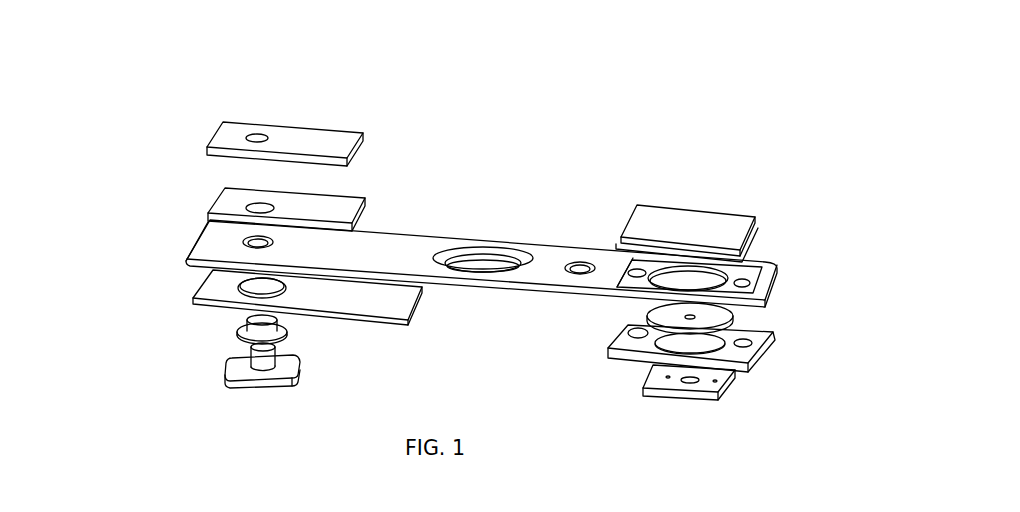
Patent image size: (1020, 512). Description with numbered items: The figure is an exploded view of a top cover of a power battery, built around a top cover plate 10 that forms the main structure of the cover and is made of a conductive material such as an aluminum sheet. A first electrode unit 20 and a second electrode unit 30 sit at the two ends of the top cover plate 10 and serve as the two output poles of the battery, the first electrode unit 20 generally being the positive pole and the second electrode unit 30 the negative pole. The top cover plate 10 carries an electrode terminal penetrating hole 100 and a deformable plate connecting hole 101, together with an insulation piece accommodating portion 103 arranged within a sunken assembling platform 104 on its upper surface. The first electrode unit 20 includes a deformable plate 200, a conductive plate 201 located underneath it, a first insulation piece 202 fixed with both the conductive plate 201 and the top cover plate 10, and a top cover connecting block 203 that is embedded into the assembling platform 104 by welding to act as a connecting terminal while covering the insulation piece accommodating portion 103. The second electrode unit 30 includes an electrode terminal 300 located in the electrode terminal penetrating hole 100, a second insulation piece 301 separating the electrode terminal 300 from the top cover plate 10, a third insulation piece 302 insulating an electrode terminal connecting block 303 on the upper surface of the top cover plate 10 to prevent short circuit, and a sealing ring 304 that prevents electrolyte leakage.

The top cover plate 10 is at (481, 228).
The electrode terminal penetrating hole 100 is at (355, 232).
The deformable plate connecting hole 101 is at (627, 247).
The insulation piece accommodating portion 103 is at (740, 277).
The assembling platform 104 is at (627, 278).
The first electrode unit 20 is at (738, 285).
The deformable plate 200 is at (760, 296).
The conductive plate 201 is at (732, 370).
The first insulation piece 202 is at (722, 313).
The top cover connecting block 203 is at (730, 222).
The second electrode unit 30 is at (251, 240).
The electrode terminal 300 is at (218, 358).
The second insulation piece 301 is at (227, 298).
The third insulation piece 302 is at (224, 192).
The electrode terminal connecting block 303 is at (230, 143).
The sealing ring 304 is at (240, 330).